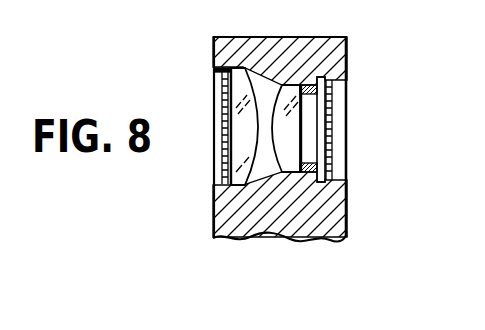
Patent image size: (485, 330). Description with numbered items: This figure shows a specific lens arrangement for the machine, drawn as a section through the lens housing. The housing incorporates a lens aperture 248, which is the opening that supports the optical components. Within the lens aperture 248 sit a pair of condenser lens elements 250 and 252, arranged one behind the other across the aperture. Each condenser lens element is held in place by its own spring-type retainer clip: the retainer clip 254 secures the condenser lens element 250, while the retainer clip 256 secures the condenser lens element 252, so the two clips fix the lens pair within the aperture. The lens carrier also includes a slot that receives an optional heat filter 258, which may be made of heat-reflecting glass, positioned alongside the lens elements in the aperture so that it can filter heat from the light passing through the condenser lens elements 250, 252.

The lens aperture 248 is at (348, 88).
The condenser lens element 250 is at (290, 163).
The condenser lens element 252 is at (228, 167).
The spring-type retainer clip 254 is at (328, 158).
The spring-type retainer clip 256 is at (215, 73).
The heat filter 258 is at (328, 123).